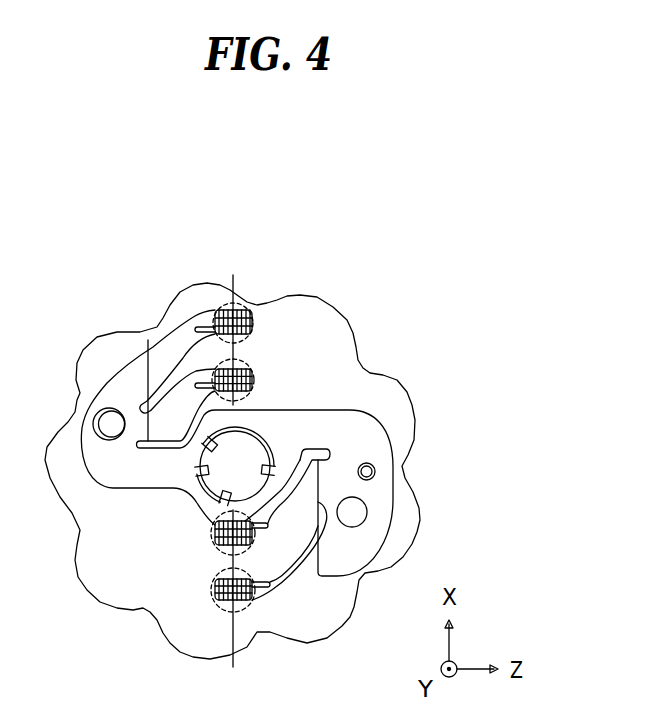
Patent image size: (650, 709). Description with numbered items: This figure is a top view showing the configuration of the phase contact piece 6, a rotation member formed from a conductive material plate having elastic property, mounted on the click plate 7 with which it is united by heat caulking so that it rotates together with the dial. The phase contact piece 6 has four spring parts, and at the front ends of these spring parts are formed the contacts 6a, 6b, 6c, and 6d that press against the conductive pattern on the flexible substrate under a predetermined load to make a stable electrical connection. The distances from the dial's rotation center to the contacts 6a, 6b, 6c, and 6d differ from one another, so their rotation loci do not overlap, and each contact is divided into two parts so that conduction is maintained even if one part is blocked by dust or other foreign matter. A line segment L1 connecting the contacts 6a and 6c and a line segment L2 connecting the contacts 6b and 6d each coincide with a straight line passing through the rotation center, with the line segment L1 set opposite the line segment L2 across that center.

The phase contact piece 6 is at (340, 410).
The contact 6a is at (253, 324).
The contact 6b is at (225, 608).
The contact 6c is at (253, 380).
The contact 6d is at (213, 532).
The click plate 7 is at (107, 583).
The line segment L1 is at (231, 293).
The line segment L2 is at (236, 636).